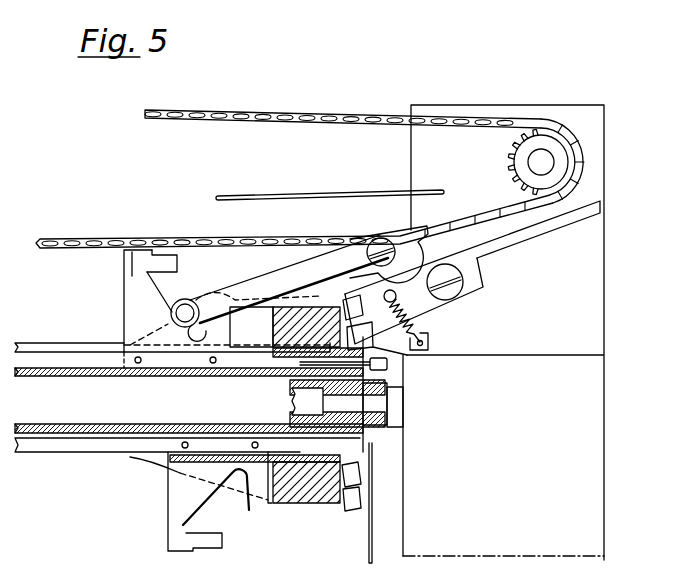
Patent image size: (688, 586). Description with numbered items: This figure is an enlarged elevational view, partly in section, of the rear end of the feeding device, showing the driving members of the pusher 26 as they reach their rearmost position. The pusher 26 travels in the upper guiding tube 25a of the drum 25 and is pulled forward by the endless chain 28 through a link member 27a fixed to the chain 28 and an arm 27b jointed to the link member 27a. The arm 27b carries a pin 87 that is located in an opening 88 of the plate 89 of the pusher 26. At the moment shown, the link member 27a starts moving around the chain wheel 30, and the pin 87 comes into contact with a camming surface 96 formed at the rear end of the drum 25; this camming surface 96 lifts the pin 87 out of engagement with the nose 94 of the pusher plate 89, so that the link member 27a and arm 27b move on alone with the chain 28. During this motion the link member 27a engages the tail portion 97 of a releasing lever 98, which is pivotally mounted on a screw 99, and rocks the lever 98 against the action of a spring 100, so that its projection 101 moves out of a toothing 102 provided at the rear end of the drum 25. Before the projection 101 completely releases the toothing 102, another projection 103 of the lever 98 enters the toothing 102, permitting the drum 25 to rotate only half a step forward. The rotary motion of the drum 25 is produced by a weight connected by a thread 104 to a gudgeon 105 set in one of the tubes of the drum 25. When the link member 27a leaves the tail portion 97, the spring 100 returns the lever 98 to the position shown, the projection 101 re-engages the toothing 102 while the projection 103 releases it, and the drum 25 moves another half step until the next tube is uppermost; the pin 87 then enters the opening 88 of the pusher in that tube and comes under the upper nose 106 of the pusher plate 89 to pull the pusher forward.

The drum 25 is at (85, 456).
The upper guiding tube 25a is at (58, 343).
The pusher 26 is at (122, 322).
The link member 27a is at (360, 240).
The arm 27b is at (270, 288).
The endless chain 28 is at (287, 112).
The chain wheel 30 is at (528, 162).
The pin 87 is at (189, 302).
The opening 88 is at (183, 270).
The plate 89 is at (134, 252).
The nose 94 is at (285, 327).
The camming surface 96 is at (170, 326).
The tail portion 97 is at (533, 231).
The releasing lever 98 is at (470, 297).
The screw 99 is at (462, 284).
The spring 100 is at (414, 316).
The projection 101 is at (348, 300).
The toothing 102 is at (352, 500).
The projection 103 is at (371, 337).
The thread 104 is at (374, 460).
The gudgeon 105 is at (337, 403).
The upper nose 106 is at (173, 258).